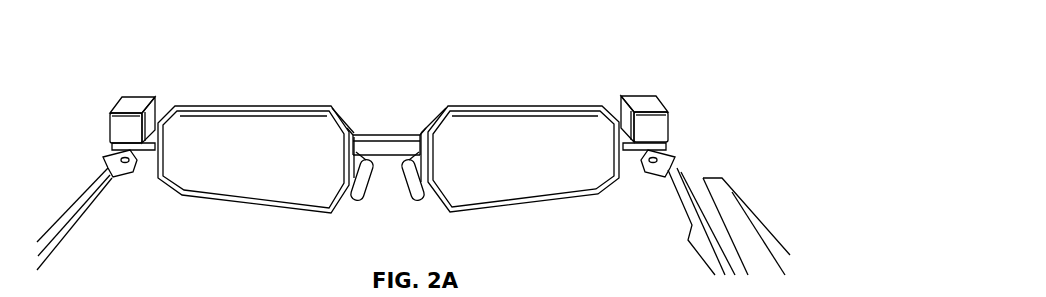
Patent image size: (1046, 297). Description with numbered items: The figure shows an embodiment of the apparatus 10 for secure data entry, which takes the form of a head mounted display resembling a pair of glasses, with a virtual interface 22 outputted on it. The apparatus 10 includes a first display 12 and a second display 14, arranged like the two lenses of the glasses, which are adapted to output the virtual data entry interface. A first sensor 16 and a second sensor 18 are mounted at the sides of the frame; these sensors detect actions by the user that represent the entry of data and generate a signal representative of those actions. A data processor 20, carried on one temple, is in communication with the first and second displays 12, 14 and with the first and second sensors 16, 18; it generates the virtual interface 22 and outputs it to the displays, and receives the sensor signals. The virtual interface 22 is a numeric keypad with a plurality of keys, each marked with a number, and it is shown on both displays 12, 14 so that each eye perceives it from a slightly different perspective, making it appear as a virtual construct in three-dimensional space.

The apparatus 10 is at (386, 151).
The first display 12 is at (188, 135).
The second display 14 is at (448, 133).
The first sensor 16 is at (130, 100).
The second sensor 18 is at (642, 100).
The data processor 20 is at (762, 218).
The virtual interface 22 is at (235, 145).